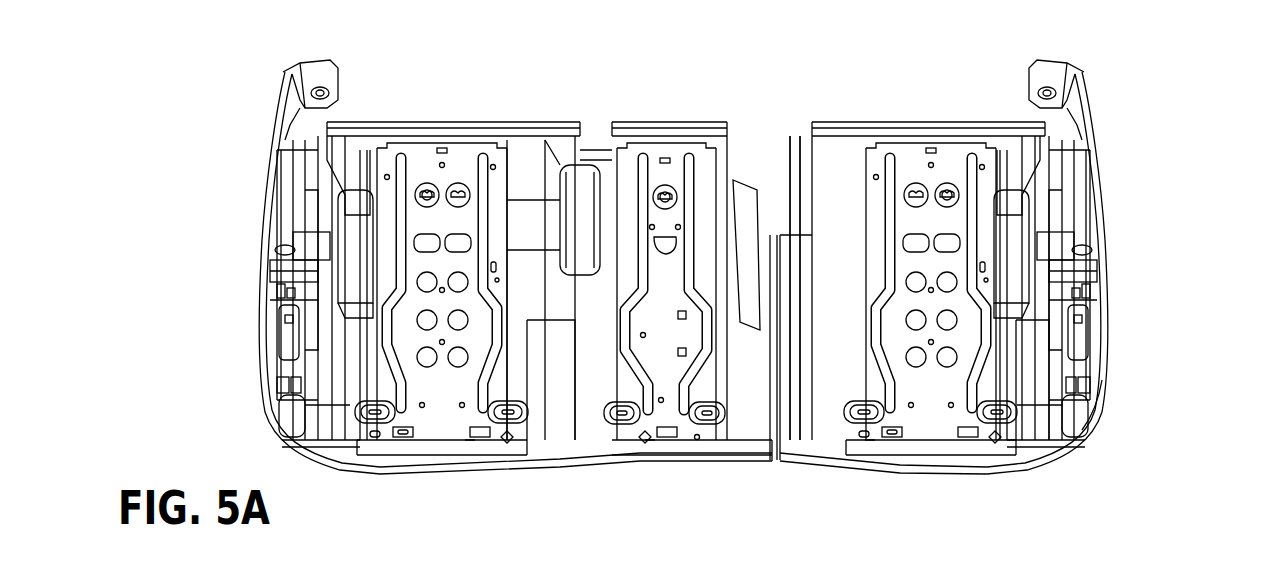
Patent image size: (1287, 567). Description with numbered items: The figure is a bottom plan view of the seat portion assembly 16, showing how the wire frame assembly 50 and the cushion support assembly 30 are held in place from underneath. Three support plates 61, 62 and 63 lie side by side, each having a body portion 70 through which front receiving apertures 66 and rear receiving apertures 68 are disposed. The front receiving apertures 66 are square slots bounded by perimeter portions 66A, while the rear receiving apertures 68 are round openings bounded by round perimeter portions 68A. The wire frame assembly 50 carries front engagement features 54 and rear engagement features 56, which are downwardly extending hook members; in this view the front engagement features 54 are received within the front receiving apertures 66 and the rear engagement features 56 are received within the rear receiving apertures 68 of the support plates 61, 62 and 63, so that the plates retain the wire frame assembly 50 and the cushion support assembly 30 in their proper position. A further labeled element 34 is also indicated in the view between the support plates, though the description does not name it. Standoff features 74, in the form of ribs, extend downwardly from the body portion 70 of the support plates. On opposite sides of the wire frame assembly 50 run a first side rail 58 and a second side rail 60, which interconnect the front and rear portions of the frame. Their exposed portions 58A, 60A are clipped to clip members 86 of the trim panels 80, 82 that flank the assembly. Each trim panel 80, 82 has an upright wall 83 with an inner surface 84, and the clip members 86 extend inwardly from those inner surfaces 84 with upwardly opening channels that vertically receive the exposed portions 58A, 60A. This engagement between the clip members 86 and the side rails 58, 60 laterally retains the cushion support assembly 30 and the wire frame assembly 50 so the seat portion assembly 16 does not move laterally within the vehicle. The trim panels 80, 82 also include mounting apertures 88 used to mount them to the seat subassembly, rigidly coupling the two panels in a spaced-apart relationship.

The seat portion assembly 16 is at (1178, 122).
The cushion support assembly 30 is at (570, 468).
The back panel 34 is at (538, 215).
The wire frame assembly 50 is at (1100, 396).
The front engagement features 54 is at (403, 438).
The rear engagement features 56 is at (429, 185).
The first side rail 58 is at (1084, 402).
The exposed portion 58A is at (1097, 280).
The second side rail 60 is at (300, 397).
The exposed portion 60A is at (275, 290).
The support plate 61 is at (996, 440).
The support plate 62 is at (697, 440).
The support plate 63 is at (507, 440).
The front receiving apertures 66 is at (480, 438).
The perimeter portions 66A is at (470, 442).
The rear receiving apertures 68 is at (430, 212).
The round perimeter portions 68A is at (424, 185).
The body portions 70 is at (375, 418).
The standoff features 74 is at (1147, 544).
The first trim panel 80 is at (1100, 122).
The second trim panel 82 is at (272, 130).
The upright walls 83 is at (262, 272).
The inner surfaces 84 is at (283, 250).
The clip members 86 is at (285, 372).
The mounting apertures 88 is at (335, 86).